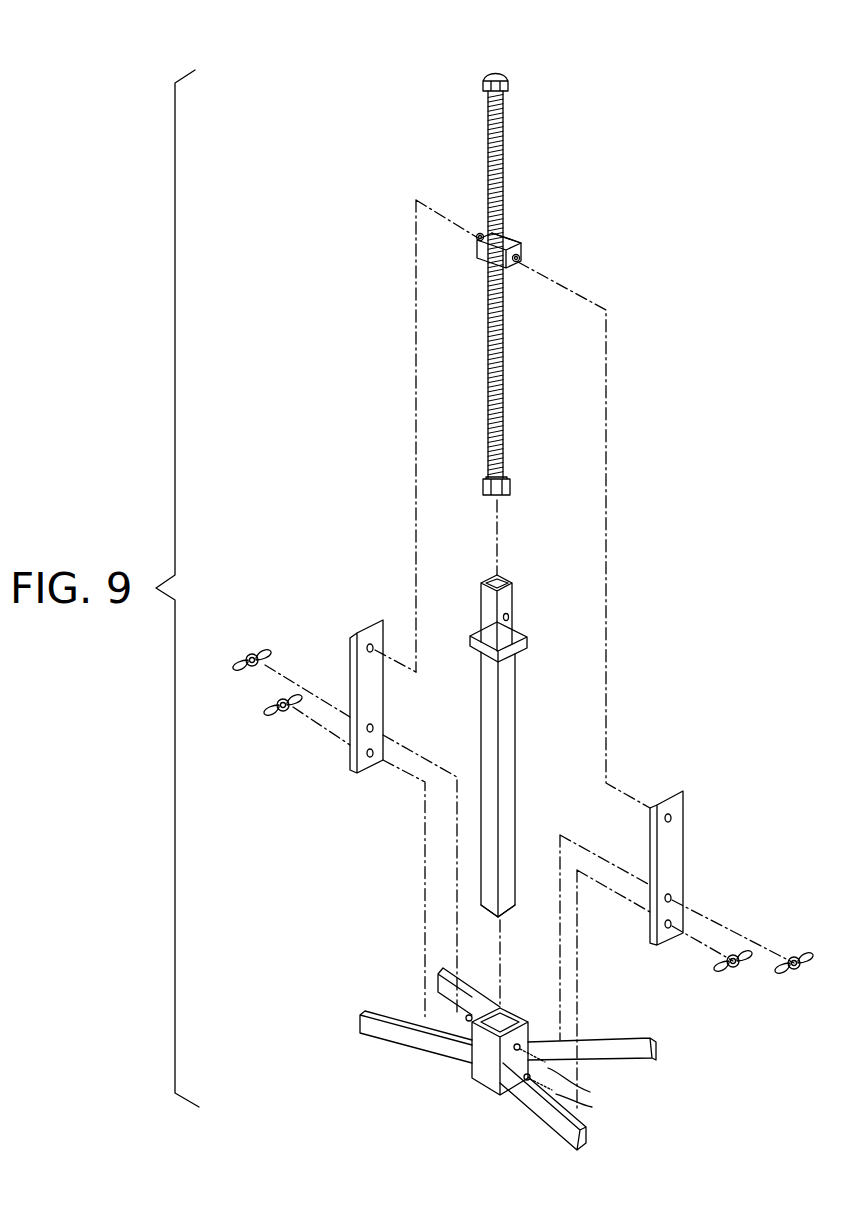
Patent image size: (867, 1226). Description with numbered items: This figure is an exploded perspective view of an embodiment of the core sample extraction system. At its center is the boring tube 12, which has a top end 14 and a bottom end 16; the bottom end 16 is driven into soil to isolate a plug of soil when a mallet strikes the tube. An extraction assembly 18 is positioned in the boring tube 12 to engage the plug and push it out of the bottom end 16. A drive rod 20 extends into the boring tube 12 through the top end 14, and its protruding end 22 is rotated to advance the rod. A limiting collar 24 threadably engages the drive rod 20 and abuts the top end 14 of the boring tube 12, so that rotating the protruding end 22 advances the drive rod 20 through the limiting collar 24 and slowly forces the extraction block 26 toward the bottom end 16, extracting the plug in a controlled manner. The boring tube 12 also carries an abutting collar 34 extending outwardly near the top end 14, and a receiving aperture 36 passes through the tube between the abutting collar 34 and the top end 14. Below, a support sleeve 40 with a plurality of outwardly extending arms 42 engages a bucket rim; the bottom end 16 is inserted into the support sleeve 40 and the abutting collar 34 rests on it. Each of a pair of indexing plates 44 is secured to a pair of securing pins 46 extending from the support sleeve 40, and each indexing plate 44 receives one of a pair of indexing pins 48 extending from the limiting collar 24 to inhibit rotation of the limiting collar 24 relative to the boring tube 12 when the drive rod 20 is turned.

The boring tube 12 is at (516, 720).
The top end 14 is at (513, 586).
The bottom end 16 is at (504, 918).
The extraction assembly 18 is at (522, 250).
The drive rod 20 is at (505, 368).
The protruding end 22 is at (492, 73).
The limiting collar 24 is at (506, 240).
The extraction block 26 is at (511, 486).
The abutting collar 34 is at (522, 644).
The receiving aperture 36 is at (510, 617).
The support sleeve 40 is at (482, 1085).
The arms 42 is at (440, 972).
The indexing plates 44 is at (352, 650).
The securing pins 46 is at (466, 1017).
The indexing pins 48 is at (480, 234).